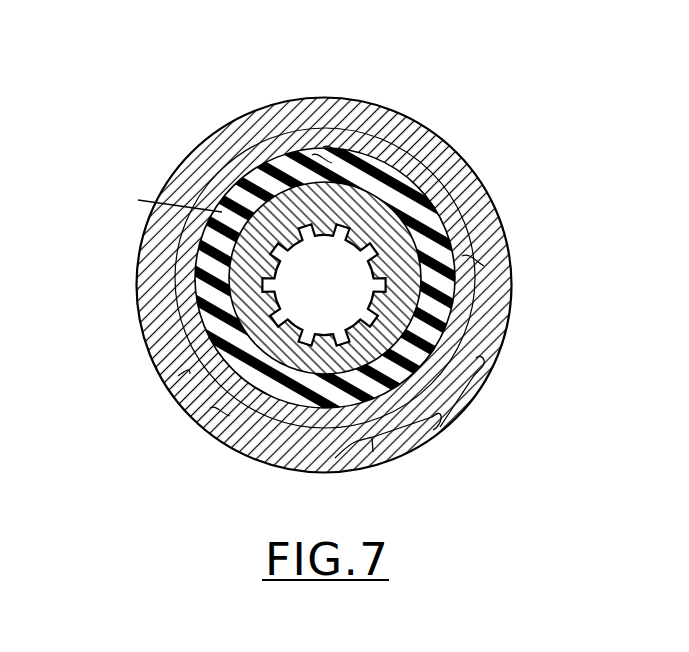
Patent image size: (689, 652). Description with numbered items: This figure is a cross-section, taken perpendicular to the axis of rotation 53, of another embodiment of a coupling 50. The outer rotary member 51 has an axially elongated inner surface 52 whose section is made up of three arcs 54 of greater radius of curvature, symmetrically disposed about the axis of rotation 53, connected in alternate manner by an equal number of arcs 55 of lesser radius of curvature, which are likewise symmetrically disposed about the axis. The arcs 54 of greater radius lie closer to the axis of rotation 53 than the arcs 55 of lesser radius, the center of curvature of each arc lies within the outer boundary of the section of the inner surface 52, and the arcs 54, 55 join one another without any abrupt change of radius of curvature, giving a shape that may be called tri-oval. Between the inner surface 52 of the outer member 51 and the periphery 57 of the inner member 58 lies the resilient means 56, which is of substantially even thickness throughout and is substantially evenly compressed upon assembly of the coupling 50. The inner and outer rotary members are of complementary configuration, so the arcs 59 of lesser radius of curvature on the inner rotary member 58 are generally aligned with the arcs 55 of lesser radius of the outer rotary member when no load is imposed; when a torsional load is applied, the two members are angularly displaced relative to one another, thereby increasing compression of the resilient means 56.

The coupling 50 is at (158, 138).
The outer rotary member 51 is at (154, 228).
The inner surface 52 is at (268, 170).
The axis of rotation 53 is at (324, 284).
The arcs of greater radius of curvature 54 is at (138, 200).
The arcs of lesser radius of curvature 55 is at (323, 147).
The resilient means 56 is at (208, 272).
The periphery 57 is at (230, 438).
The inner rotary member 58 is at (237, 318).
The arcs of lesser radius of curvature of the inner rotary member 59 is at (312, 155).